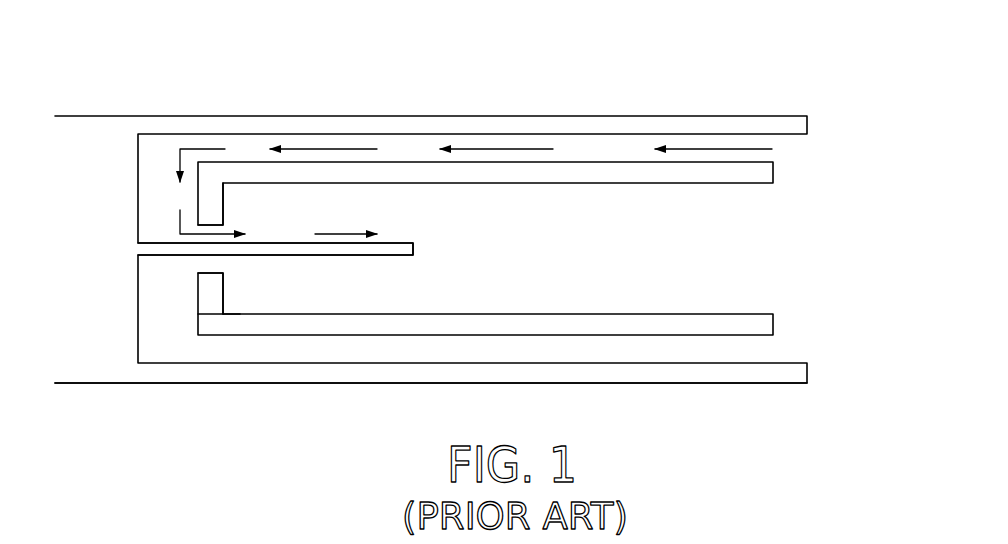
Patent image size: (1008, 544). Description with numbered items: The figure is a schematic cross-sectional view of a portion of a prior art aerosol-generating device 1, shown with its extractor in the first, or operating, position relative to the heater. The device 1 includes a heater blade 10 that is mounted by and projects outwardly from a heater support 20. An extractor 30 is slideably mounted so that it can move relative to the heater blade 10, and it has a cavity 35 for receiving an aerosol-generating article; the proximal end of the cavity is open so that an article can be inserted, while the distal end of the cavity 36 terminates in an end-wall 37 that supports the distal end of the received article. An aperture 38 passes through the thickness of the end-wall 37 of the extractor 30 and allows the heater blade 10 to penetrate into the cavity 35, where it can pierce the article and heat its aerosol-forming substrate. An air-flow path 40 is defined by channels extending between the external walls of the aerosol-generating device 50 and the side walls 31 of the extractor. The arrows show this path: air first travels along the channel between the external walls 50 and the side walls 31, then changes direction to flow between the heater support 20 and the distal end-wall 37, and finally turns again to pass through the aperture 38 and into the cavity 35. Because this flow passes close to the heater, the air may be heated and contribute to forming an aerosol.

The aerosol-generating device 1 is at (592, 85).
The heater blade 10 is at (403, 256).
The heater support 20 is at (105, 372).
The extractor 30 is at (776, 320).
The side walls of the extractor 31 is at (605, 177).
The cavity 35 is at (740, 235).
The distal end of the cavity 36 is at (240, 302).
The end-wall 37 is at (223, 205).
The aperture 38 is at (223, 263).
The air-flow path 40 is at (788, 149).
The external walls of the aerosol-generating device 50 is at (397, 116).